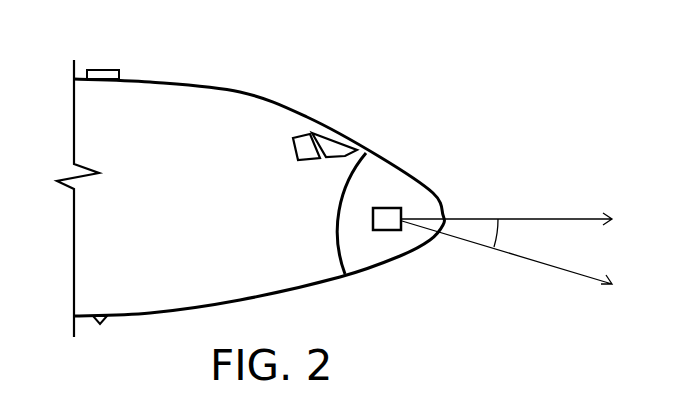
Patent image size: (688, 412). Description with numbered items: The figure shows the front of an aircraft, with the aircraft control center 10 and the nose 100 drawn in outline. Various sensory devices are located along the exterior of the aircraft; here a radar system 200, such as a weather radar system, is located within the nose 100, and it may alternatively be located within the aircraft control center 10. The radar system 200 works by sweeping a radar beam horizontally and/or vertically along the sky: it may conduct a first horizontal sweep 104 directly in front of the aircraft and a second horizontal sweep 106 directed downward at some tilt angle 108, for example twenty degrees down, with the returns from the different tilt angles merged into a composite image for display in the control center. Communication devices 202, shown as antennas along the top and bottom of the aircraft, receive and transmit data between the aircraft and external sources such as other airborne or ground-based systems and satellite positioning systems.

The aircraft control center 10 is at (125, 95).
The nose 100 is at (365, 170).
The first horizontal sweep 104 is at (583, 218).
The second horizontal sweep 106 is at (548, 265).
The tilt angle 108 is at (499, 220).
The radar system 200 is at (386, 221).
The communication devices 202 is at (105, 71).